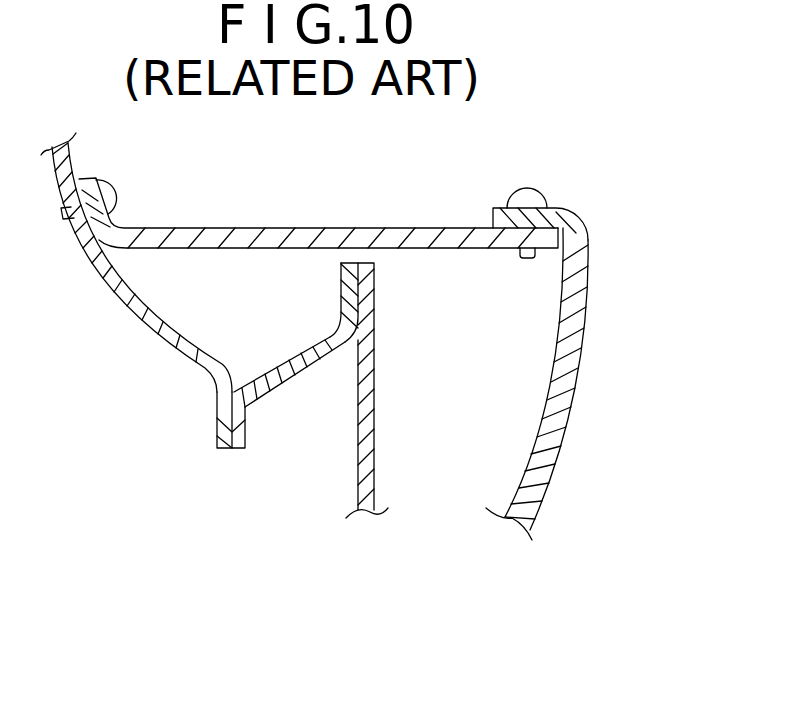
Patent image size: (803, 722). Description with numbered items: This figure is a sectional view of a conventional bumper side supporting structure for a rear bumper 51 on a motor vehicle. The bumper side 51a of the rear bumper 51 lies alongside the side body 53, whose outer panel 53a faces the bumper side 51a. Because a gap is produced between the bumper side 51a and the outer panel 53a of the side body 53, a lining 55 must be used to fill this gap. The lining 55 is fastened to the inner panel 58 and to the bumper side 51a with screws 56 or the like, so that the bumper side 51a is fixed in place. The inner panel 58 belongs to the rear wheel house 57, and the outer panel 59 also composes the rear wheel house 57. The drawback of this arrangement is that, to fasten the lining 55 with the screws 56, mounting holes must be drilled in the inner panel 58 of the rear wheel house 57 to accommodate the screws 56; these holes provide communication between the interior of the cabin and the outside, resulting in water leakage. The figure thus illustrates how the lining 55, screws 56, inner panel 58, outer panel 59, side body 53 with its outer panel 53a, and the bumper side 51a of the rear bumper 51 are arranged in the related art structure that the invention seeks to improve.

The rear bumper 51 is at (538, 514).
The bumper side 51a is at (584, 290).
The side body 53 is at (376, 450).
The outer panel of side body 53a is at (376, 293).
The lining 55 is at (334, 228).
The screws 56 is at (114, 194).
The rear wheel house 57 is at (214, 432).
The inner panel 58 is at (123, 300).
The outer panel of rear wheel house 59 is at (297, 374).